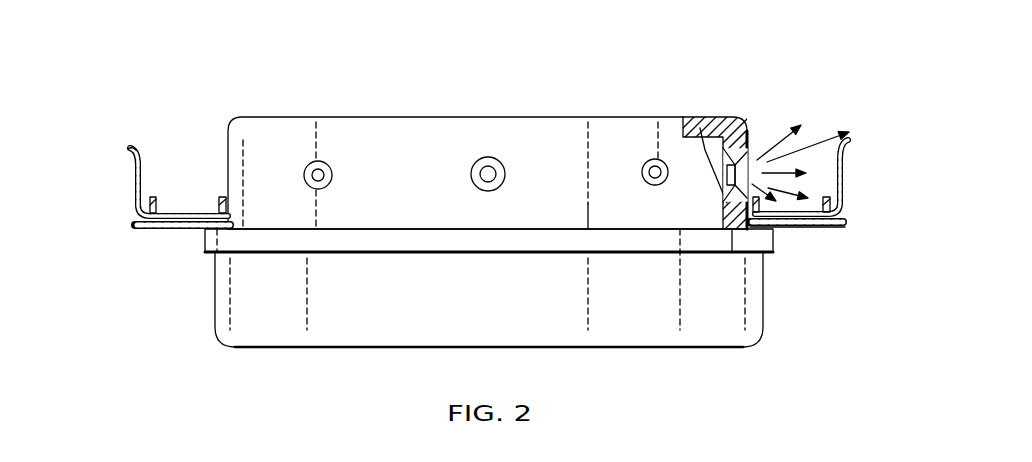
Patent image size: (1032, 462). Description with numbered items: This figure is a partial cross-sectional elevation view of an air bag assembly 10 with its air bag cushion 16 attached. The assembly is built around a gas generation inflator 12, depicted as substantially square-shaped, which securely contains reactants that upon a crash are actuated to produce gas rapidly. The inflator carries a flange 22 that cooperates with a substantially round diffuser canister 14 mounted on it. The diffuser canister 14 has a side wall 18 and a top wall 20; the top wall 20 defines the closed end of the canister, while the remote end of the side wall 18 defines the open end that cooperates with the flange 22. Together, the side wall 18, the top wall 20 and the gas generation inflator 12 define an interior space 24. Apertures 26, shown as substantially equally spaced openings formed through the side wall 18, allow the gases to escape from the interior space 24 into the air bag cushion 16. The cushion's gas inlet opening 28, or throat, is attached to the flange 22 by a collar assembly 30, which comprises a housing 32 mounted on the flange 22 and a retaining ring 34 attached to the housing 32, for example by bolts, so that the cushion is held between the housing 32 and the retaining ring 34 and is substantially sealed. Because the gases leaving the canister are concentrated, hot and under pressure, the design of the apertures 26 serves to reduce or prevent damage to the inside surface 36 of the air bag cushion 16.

The air bag assembly 10 is at (178, 117).
The gas generation inflator 12 is at (240, 317).
The diffuser canister 14 is at (252, 133).
The air bag cushion 16 is at (136, 181).
The side wall 18 is at (748, 157).
The top wall 20 is at (716, 118).
The flange 22 is at (232, 245).
The interior space 24 is at (700, 128).
The apertures 26 is at (320, 172).
The gas inlet opening 28 is at (139, 212).
The collar assembly 30 is at (843, 245).
The housing 32 is at (800, 229).
The retaining ring 34 is at (842, 213).
The inside surface 36 is at (141, 156).